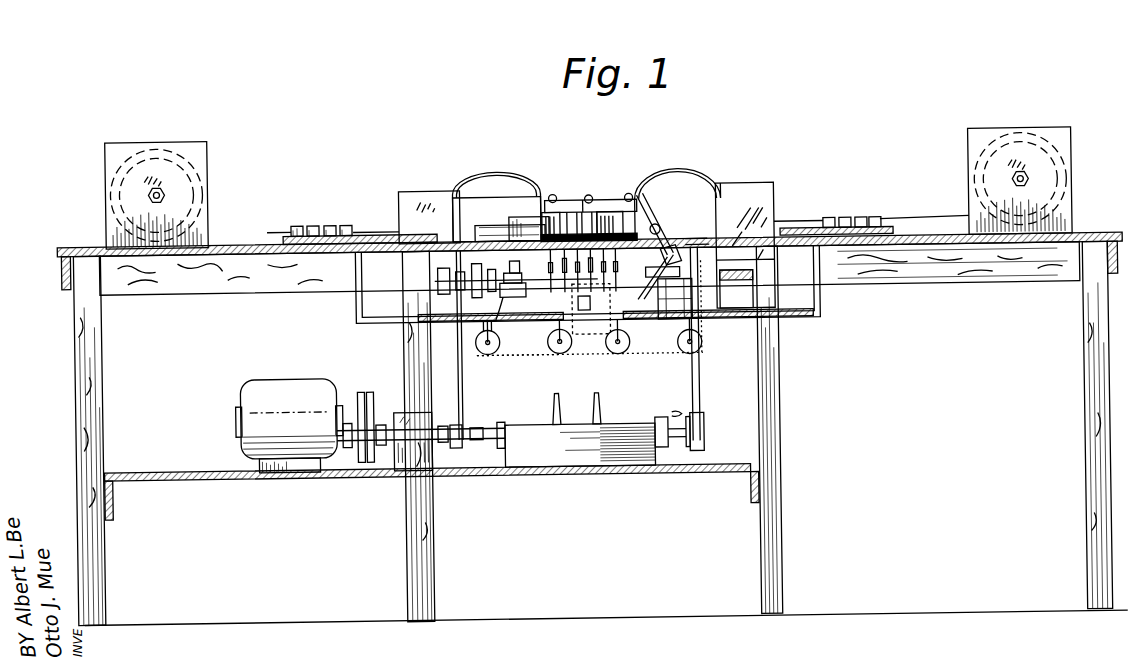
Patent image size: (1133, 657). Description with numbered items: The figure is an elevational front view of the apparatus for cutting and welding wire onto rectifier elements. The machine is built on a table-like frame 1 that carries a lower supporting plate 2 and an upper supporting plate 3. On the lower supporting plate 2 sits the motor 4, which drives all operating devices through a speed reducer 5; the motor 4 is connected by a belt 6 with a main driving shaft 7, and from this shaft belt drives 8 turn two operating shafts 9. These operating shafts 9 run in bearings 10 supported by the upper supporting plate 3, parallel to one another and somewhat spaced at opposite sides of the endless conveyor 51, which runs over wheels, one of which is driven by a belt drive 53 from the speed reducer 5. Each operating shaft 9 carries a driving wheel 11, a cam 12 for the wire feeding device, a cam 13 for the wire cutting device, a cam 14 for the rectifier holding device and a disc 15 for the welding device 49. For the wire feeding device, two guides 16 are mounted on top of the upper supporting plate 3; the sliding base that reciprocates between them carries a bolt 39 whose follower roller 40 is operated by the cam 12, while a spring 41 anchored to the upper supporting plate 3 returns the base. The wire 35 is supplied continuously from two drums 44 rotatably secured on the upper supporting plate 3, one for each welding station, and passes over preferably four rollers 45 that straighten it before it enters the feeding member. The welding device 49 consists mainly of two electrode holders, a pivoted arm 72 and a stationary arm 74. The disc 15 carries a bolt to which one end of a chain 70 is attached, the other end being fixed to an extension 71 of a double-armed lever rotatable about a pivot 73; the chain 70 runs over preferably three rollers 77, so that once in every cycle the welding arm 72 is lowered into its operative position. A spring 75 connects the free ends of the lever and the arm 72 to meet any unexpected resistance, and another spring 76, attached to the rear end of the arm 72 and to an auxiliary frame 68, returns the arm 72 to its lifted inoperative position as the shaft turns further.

The table-like frame 1 is at (78, 372).
The lower supporting plate 2 is at (720, 476).
The upper supporting plate 3 is at (195, 249).
The motor 4 is at (287, 385).
The speed reducer 5 is at (620, 454).
The belt 6 is at (360, 444).
The main driving shaft 7 is at (388, 468).
The belt drives 8 is at (463, 396).
The operating shafts 9 is at (528, 288).
The bearings 10 is at (488, 288).
The driving wheel 11 is at (462, 296).
The cam 12 is at (520, 328).
The cam 13 is at (522, 262).
The cam 14 is at (583, 312).
The disc 15 is at (600, 318).
The guides 16 is at (526, 226).
The wire 35 is at (262, 212).
The bolt 39 is at (518, 226).
The follower roller 40 is at (485, 252).
The spring 41 is at (468, 220).
The drums 44 is at (192, 178).
The rollers 45 is at (342, 222).
The welding device 49 is at (575, 196).
The endless conveyor 51 is at (600, 230).
The belt drive 53 is at (710, 392).
The auxiliary frame 68 is at (660, 332).
The chain 70 is at (530, 362).
The extension 71 is at (640, 276).
The pivoted arm 72 is at (588, 202).
The pivot 73 is at (676, 235).
The stationary arm 74 is at (656, 229).
The spring 75 is at (714, 244).
The spring 76 is at (706, 238).
The rollers 77 is at (756, 290).